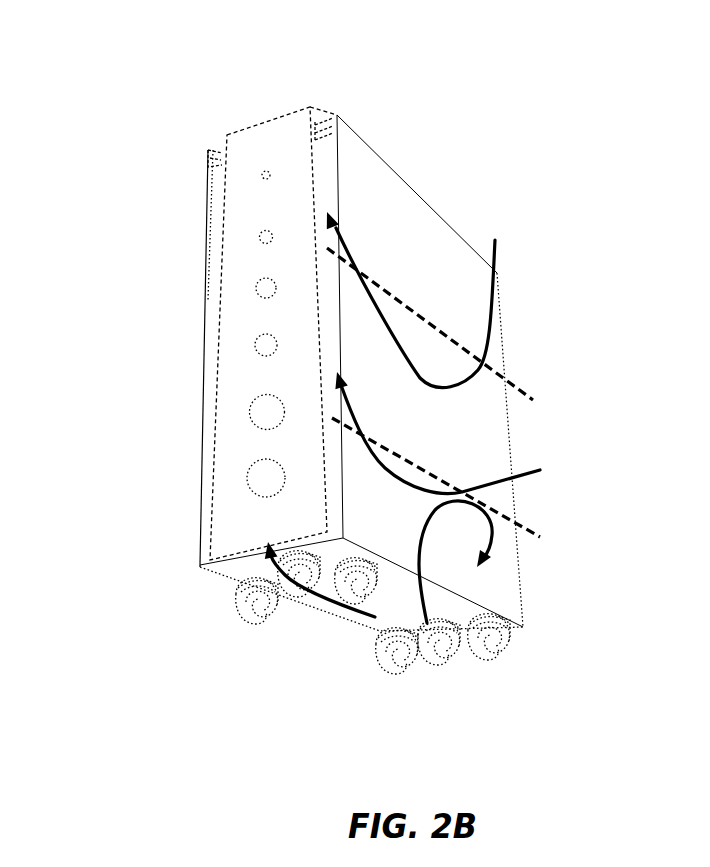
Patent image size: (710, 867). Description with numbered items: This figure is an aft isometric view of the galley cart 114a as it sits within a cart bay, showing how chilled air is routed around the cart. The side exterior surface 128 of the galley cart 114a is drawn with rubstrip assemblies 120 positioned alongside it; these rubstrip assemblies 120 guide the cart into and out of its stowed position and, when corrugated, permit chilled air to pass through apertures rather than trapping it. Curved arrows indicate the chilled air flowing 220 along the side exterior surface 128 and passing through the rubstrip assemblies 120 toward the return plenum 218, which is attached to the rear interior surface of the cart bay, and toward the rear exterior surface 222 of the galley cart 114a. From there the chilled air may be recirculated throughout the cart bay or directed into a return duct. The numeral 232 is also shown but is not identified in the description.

The galley cart 114a is at (157, 113).
The side exterior surface 128 is at (402, 222).
The return plenum 218 is at (267, 140).
The rear exterior surface 222 is at (215, 237).
The ambient environment 232 is at (633, 135).
The rubstrip assemblies 120 is at (522, 385).
The flowing of chilled air 220 is at (507, 317).